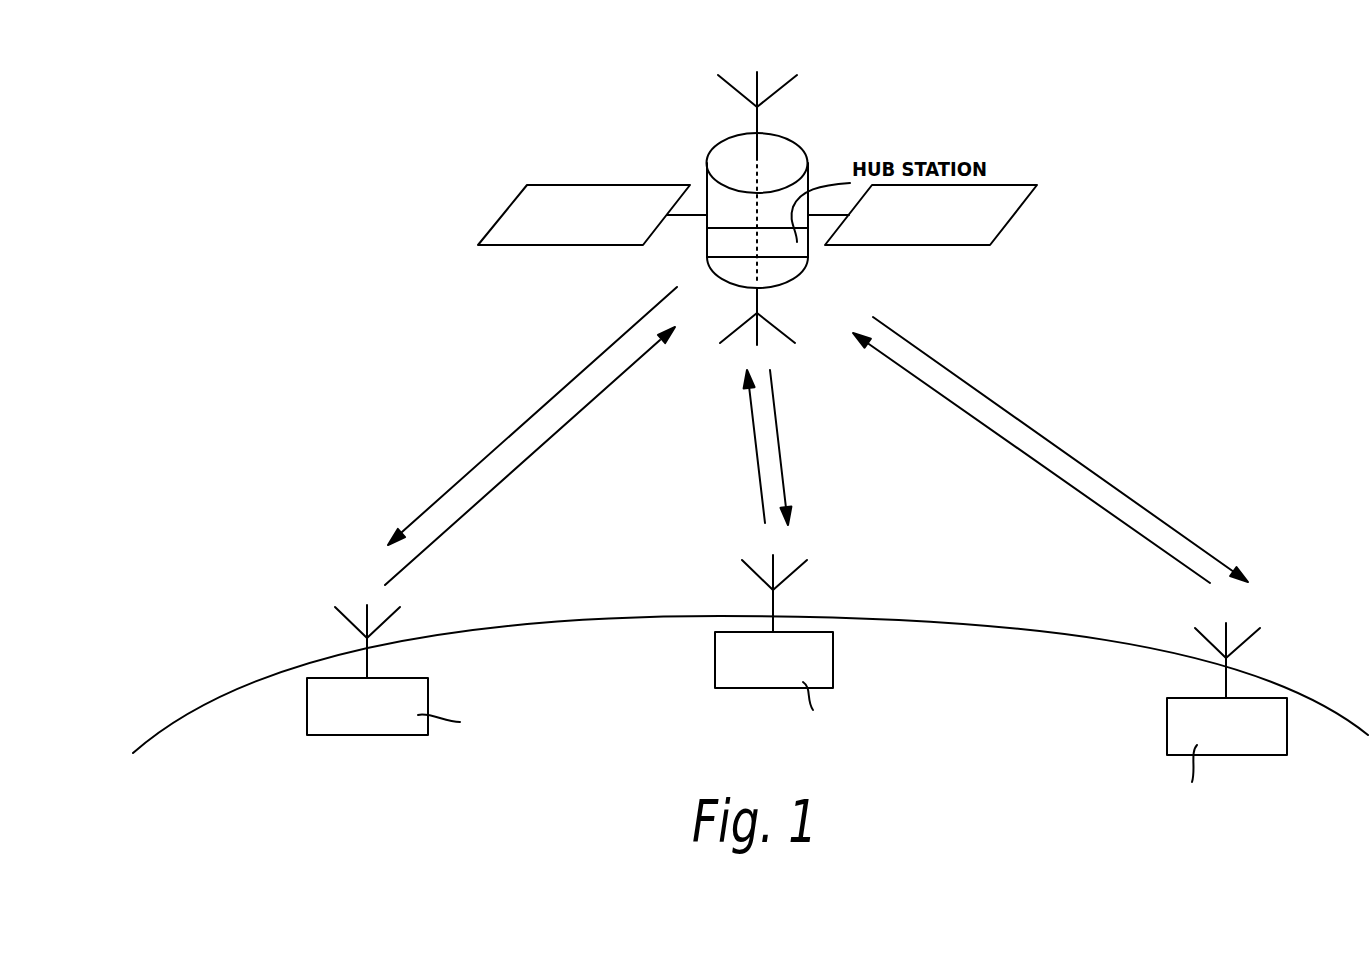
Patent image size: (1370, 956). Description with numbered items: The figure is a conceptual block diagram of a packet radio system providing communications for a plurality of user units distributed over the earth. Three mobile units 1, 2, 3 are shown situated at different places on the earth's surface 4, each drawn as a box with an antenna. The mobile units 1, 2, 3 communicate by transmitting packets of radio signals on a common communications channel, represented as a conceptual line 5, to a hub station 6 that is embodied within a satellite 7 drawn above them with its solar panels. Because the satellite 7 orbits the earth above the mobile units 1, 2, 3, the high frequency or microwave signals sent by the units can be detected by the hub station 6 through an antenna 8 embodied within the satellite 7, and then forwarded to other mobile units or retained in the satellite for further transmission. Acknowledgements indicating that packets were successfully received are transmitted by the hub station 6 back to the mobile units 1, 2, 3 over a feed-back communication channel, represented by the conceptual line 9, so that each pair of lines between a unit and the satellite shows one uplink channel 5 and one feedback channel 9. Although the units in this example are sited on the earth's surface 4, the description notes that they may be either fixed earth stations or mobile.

The mobile unit 1 is at (359, 721).
The mobile unit 2 is at (765, 674).
The mobile unit 3 is at (1218, 741).
The earth's surface 4 is at (540, 620).
The common communications channel 5 is at (528, 456).
The hub station 6 is at (793, 255).
The satellite 7 is at (785, 160).
The antenna 8 is at (778, 326).
The feed-back communication channel 9 is at (548, 403).